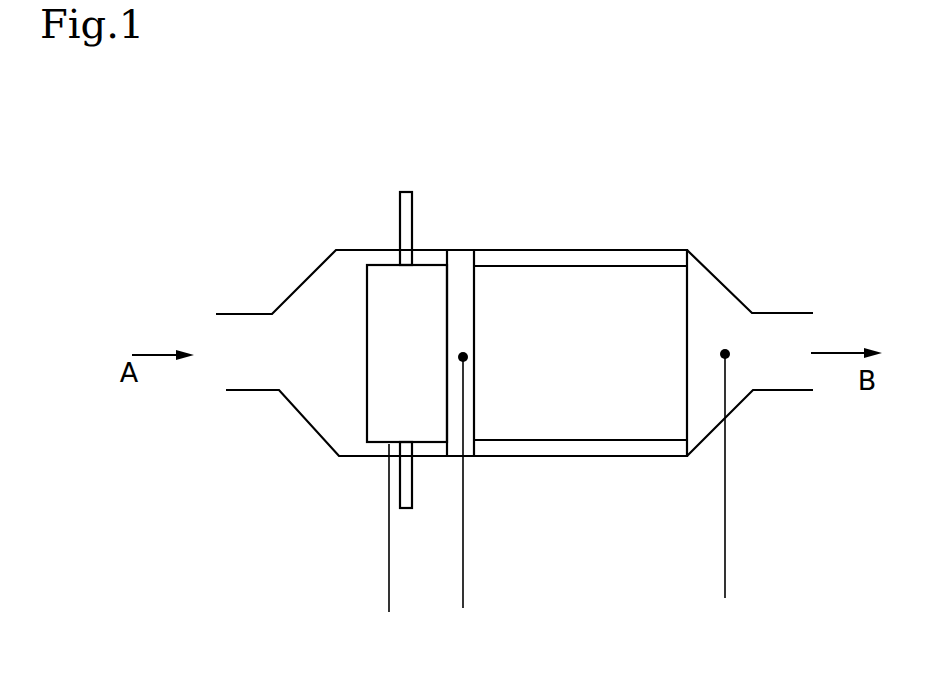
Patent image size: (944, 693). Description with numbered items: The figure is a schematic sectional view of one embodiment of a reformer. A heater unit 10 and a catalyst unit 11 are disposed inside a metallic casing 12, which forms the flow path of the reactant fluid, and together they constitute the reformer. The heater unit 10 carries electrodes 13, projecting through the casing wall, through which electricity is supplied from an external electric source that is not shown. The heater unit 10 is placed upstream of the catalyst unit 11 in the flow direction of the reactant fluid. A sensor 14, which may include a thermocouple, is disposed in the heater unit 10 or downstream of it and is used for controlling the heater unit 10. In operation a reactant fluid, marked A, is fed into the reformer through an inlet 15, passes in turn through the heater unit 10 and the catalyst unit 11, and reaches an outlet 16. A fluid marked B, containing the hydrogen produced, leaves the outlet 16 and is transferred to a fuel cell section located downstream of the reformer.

The heater unit 10 is at (443, 267).
The catalyst unit 11 is at (608, 283).
The metallic casing 12 is at (351, 250).
The electrodes 13 is at (413, 232).
The sensor 14 is at (389, 592).
The inlet 15 is at (240, 328).
The outlet 16 is at (773, 333).